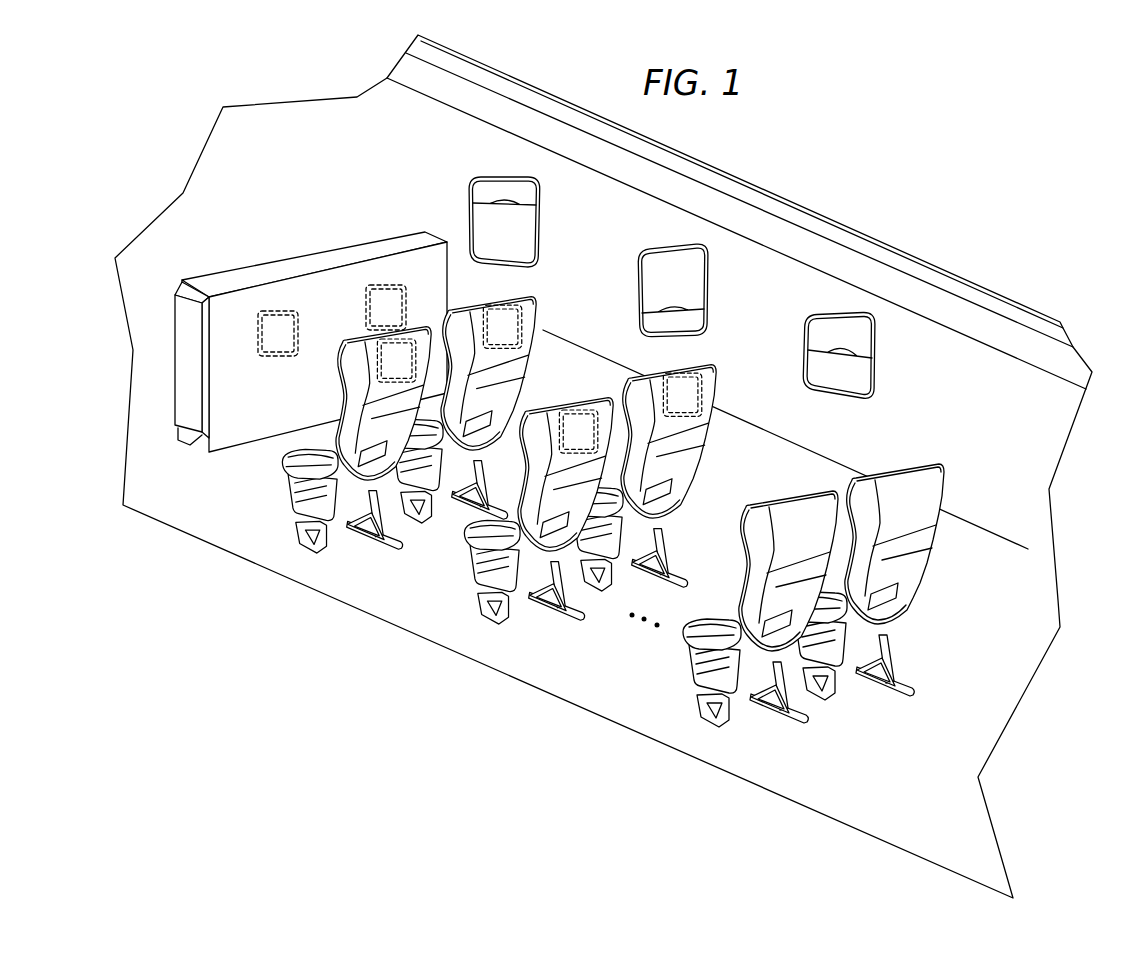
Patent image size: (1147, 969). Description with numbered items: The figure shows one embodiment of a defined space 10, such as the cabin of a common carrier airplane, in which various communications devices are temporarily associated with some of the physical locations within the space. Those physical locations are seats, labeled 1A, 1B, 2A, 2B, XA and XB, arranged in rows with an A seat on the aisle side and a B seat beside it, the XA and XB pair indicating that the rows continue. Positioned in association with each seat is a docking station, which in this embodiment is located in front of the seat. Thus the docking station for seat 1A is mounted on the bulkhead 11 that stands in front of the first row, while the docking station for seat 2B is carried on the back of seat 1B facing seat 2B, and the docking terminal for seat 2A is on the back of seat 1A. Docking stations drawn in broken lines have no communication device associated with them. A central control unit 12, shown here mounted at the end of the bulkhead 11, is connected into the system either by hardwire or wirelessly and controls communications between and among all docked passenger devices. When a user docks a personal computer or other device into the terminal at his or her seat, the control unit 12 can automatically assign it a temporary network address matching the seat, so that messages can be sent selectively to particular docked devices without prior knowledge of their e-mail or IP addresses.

The space 10 is at (1016, 260).
The bulkhead 11 is at (310, 254).
The control unit 12 is at (192, 444).
The seat 1A is at (285, 482).
The seat 1B is at (538, 320).
The seat 2A is at (460, 558).
The seat 2B is at (713, 395).
The seat XA is at (690, 653).
The seat XB is at (935, 487).